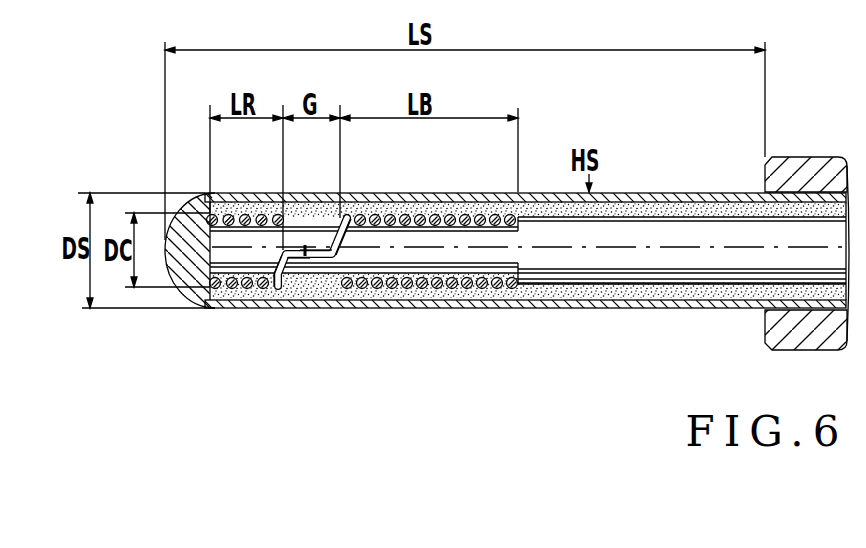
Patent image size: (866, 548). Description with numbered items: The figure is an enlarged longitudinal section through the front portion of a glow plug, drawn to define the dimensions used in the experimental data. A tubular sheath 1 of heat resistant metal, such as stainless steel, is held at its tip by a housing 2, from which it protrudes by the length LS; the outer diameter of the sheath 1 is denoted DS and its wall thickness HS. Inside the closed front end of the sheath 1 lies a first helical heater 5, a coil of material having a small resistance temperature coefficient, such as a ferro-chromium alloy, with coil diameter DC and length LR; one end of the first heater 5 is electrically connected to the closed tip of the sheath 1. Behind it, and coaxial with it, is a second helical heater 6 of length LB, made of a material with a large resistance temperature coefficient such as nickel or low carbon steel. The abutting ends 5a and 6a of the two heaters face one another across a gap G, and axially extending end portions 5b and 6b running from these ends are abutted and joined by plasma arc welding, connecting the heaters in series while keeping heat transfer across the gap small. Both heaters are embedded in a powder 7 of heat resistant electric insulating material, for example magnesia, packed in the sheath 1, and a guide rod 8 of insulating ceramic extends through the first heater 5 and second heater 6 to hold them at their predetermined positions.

The sheath 1 is at (687, 191).
The housing 2 is at (810, 167).
The first helical heater 5 is at (247, 288).
The abutting end of first heater 5a is at (272, 286).
The axially extending end portion of first heater 5b is at (297, 258).
The second helical heater 6 is at (378, 292).
The abutting end of second heater 6a is at (348, 222).
The axially extending end portion of second heater 6b is at (315, 247).
The powder 7 is at (610, 293).
The guide rod 8 is at (460, 262).